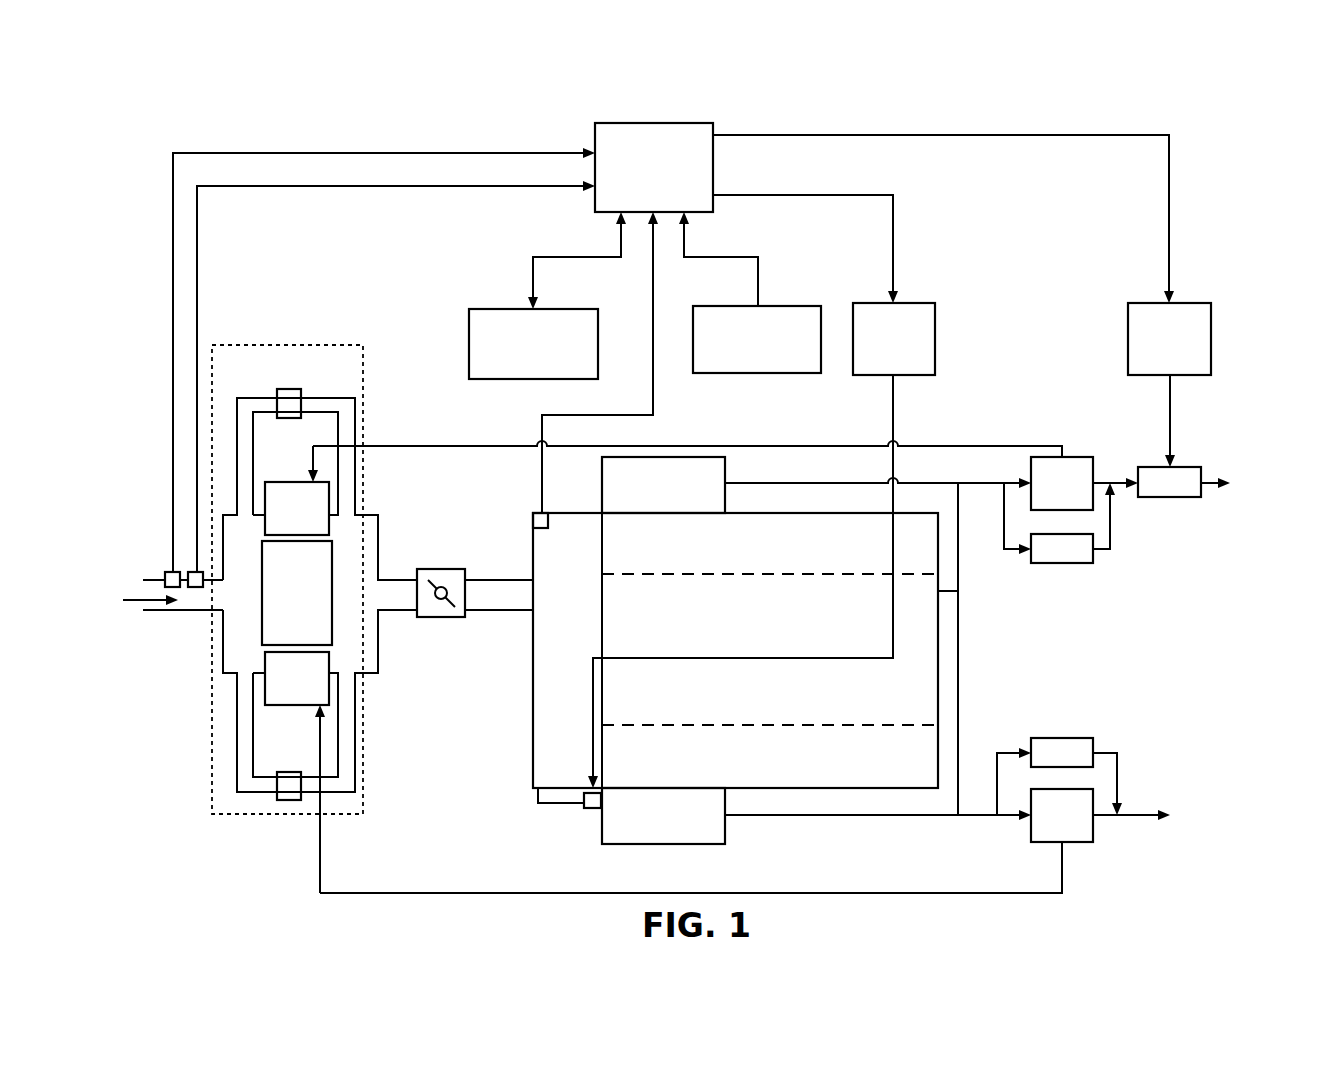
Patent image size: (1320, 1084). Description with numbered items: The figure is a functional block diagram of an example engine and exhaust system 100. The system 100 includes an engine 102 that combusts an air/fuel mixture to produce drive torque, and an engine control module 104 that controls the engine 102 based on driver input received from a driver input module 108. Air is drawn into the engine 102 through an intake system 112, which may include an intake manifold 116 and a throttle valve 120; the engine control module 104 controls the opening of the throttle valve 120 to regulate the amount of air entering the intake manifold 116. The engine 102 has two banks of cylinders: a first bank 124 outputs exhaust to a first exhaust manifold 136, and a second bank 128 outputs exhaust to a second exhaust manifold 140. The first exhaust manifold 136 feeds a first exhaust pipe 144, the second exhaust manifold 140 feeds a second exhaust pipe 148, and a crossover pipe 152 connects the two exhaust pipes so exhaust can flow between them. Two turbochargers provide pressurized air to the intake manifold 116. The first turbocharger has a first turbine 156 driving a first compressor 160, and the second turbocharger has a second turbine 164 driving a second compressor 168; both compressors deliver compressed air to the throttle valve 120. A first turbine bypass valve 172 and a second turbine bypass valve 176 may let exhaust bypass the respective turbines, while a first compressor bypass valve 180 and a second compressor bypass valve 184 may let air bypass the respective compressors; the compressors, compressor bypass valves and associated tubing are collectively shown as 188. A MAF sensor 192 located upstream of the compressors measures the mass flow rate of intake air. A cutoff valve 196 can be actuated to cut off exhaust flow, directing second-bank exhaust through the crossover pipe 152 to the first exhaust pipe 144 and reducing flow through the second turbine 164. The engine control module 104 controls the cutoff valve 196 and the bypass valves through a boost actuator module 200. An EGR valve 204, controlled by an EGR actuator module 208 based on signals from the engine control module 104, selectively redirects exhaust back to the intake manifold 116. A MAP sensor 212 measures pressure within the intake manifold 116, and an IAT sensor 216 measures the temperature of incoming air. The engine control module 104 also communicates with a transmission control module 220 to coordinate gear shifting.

The engine and exhaust system 100 is at (156, 146).
The engine 102 is at (958, 591).
The engine control module 104 is at (660, 123).
The driver input module 108 is at (760, 373).
The intake system 112 is at (164, 618).
The intake manifold 116 is at (533, 728).
The throttle valve 120 is at (437, 617).
The first bank of cylinders 124 is at (790, 725).
The second bank of cylinders 128 is at (800, 574).
The first exhaust manifold 136 is at (665, 844).
The second exhaust manifold 140 is at (672, 457).
The first exhaust pipe 144 is at (820, 815).
The second exhaust pipe 148 is at (775, 483).
The crossover pipe 152 is at (958, 638).
The first turbine 156 is at (1078, 842).
The first compressor 160 is at (305, 705).
The second turbine 164 is at (1075, 457).
The second compressor 168 is at (305, 482).
The first turbine bypass valve 172 is at (1060, 738).
The second turbine bypass valve 176 is at (1060, 563).
The first compressor bypass valve 180 is at (285, 800).
The second compressor bypass valve 184 is at (289, 389).
The compressors, compressor bypass valves and associated tubing 188 is at (212, 797).
The MAF sensor 192 is at (197, 587).
The cutoff valve 196 is at (1190, 497).
The boost actuator module 200 is at (1192, 303).
The EGR valve 204 is at (593, 808).
The EGR actuator module 208 is at (918, 303).
The MAP sensor 212 is at (542, 513).
The IAT sensor 216 is at (166, 568).
The transmission control module 220 is at (469, 345).